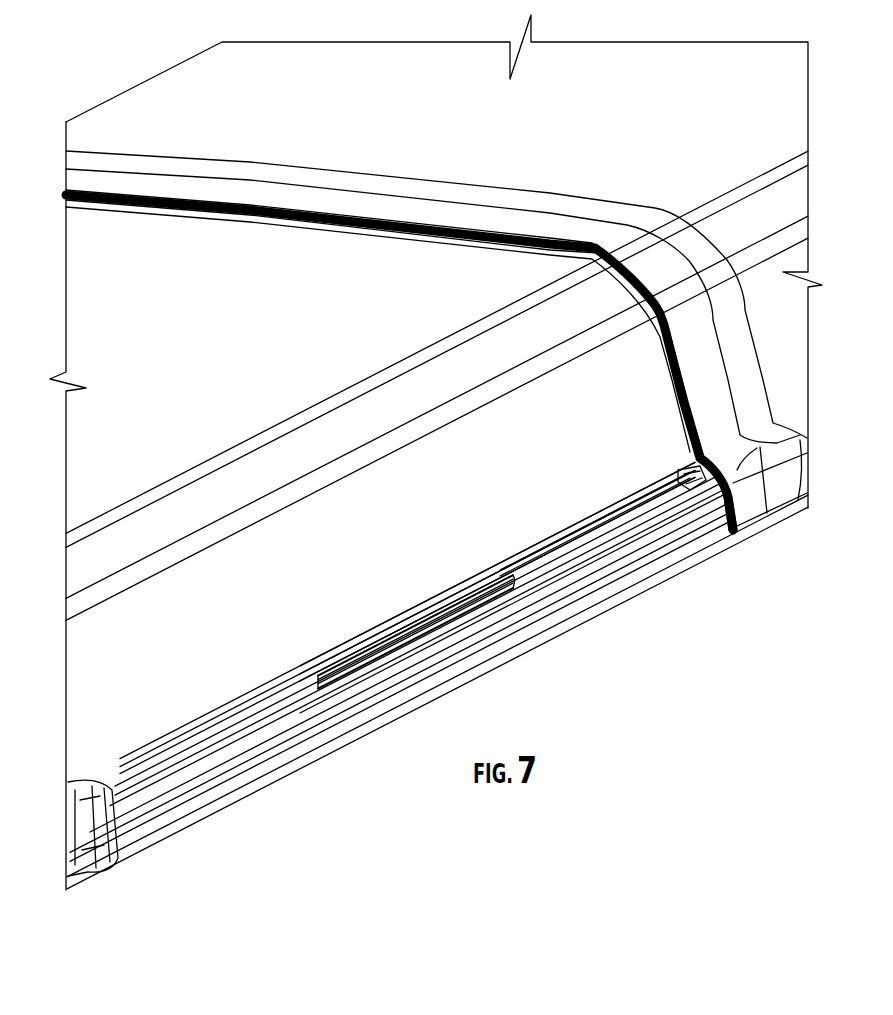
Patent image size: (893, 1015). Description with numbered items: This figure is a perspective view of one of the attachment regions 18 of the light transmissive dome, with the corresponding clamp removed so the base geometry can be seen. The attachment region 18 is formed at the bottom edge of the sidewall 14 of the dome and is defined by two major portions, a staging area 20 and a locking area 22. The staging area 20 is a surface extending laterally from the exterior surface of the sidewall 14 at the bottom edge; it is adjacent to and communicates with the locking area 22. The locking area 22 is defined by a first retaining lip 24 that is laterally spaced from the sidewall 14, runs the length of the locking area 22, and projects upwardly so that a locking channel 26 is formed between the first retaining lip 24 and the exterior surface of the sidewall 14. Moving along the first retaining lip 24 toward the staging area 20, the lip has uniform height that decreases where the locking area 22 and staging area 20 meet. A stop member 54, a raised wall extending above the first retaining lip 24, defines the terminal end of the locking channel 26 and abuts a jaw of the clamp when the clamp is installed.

The sidewall 14 is at (183, 683).
The attachment region 18 is at (521, 594).
The staging area 20 is at (415, 633).
The locking area 22 is at (577, 539).
The first retaining lip 24 is at (647, 520).
The locking channel 26 is at (640, 508).
The stop member 54 is at (690, 469).